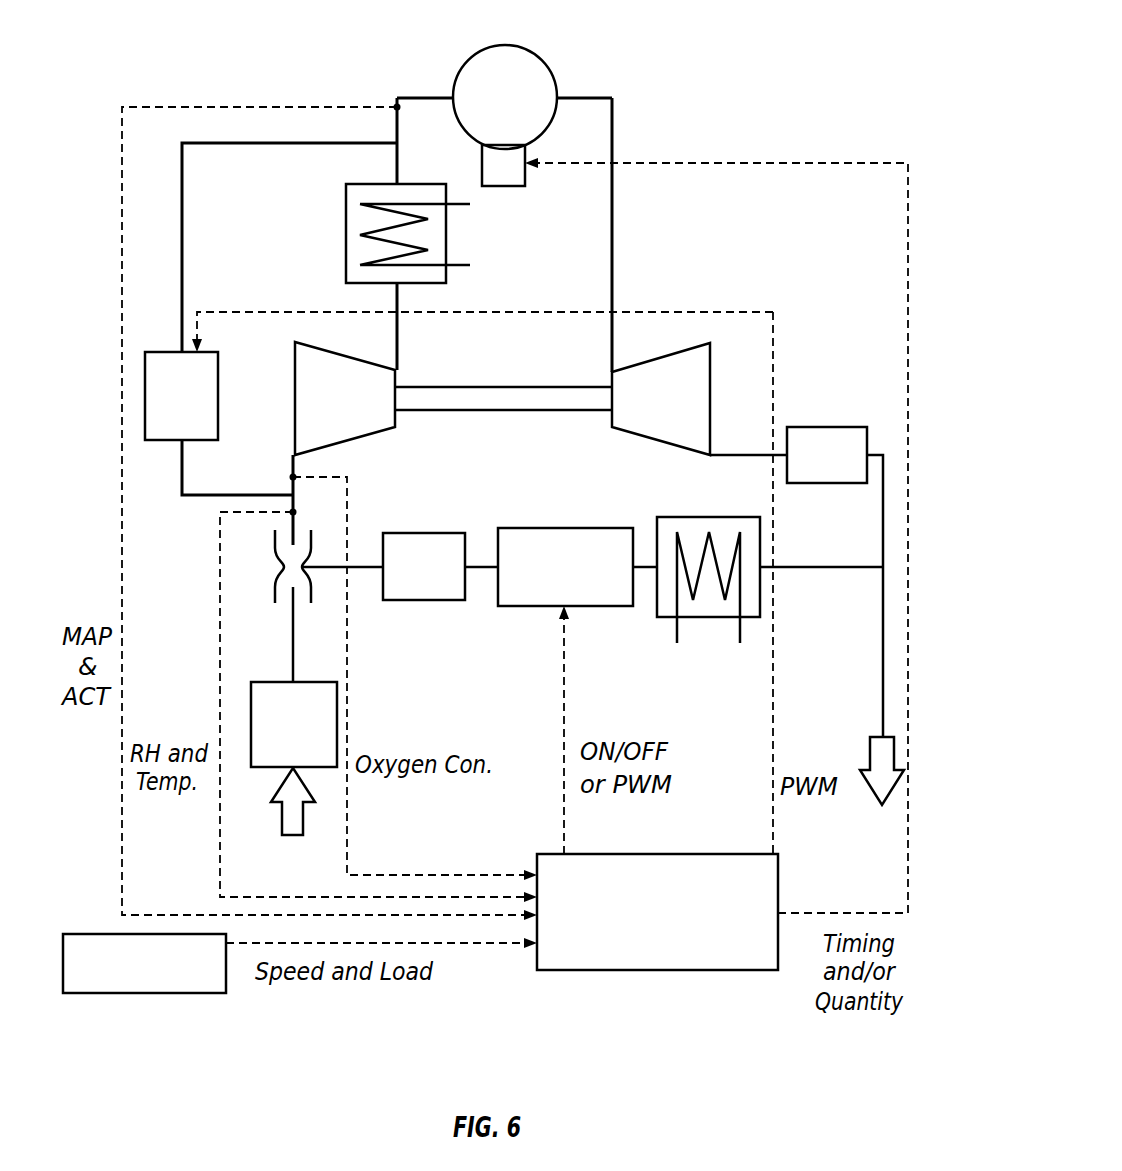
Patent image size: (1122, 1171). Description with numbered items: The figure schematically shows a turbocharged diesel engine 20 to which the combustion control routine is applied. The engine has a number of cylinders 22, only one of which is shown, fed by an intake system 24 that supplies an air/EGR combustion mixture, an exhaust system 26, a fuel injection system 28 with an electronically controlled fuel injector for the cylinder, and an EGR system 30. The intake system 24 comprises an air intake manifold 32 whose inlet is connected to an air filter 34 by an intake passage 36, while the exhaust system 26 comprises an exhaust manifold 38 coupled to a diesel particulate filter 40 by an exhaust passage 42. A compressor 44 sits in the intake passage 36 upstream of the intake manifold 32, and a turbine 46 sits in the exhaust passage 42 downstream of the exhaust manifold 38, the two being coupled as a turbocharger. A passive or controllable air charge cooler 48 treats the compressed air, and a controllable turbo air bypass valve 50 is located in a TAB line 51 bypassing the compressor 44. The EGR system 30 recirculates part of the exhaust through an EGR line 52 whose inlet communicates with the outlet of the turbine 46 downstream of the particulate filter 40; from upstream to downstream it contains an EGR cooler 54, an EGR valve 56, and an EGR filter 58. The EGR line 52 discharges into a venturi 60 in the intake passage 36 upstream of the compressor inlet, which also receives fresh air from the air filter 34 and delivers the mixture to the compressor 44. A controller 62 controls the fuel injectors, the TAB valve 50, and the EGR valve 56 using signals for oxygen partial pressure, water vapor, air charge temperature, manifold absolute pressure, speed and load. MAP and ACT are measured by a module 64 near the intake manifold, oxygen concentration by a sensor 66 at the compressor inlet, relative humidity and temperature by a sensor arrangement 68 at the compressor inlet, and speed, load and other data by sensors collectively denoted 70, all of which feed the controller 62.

The diesel engine 20 is at (728, 36).
The cylinder 22 is at (543, 55).
The intake system 24 is at (262, 346).
The exhaust system 26 is at (796, 344).
The fuel injection system 28 is at (525, 155).
The EGR system 30 is at (574, 490).
The air intake manifold 32 is at (456, 95).
The air filter 34 is at (330, 727).
The intake passage 36 is at (293, 652).
The exhaust manifold 38 is at (563, 92).
The diesel particulate filter 40 is at (820, 427).
The exhaust passage 42 is at (612, 233).
The compressor 44 is at (337, 350).
The turbine 46 is at (710, 363).
The air charge cooler 48 is at (446, 233).
The turbo air bypass (TAB) valve 50 is at (145, 385).
The TAB line 51 is at (182, 220).
The EGR line 52 is at (807, 567).
The EGR cooler 54 is at (713, 518).
The EGR valve 56 is at (545, 528).
The EGR filter 58 is at (430, 533).
The venturi 60 is at (313, 530).
The controller 62 is at (728, 970).
The MAP/ACT sensor module 64 is at (395, 106).
The O2 concentration sensor 66 is at (293, 477).
The relative humidity and temperature sensor arrangement 68 is at (293, 512).
The other sensors 70 is at (110, 933).